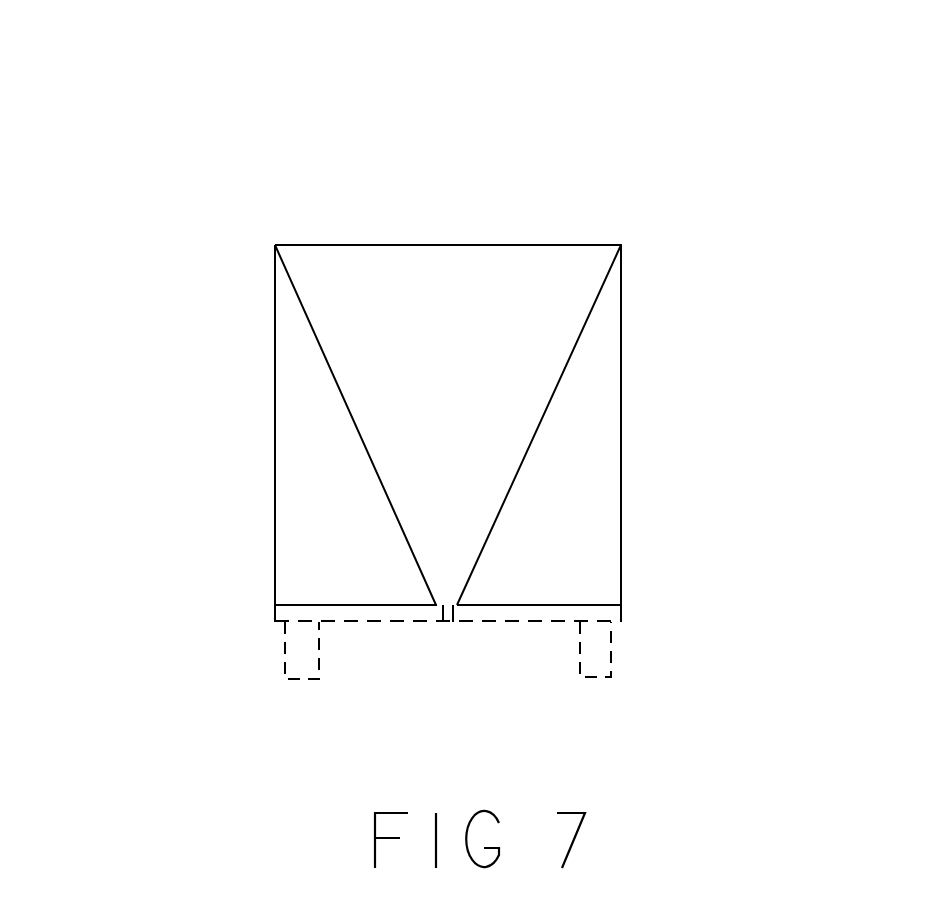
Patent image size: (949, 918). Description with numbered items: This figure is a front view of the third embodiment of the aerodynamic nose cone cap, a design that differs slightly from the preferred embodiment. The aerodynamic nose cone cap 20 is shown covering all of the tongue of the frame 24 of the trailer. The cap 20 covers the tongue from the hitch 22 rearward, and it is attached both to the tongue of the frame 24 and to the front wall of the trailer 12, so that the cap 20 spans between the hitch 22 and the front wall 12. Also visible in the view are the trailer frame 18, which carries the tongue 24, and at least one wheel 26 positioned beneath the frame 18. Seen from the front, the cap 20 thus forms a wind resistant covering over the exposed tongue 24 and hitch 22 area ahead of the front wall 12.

The front wall of trailer 12 is at (348, 244).
The cap 20 is at (509, 285).
The tongue of frame 24 is at (538, 604).
The frame 18 is at (273, 612).
The wheel 26 is at (618, 640).
The hitch 22 is at (443, 624).